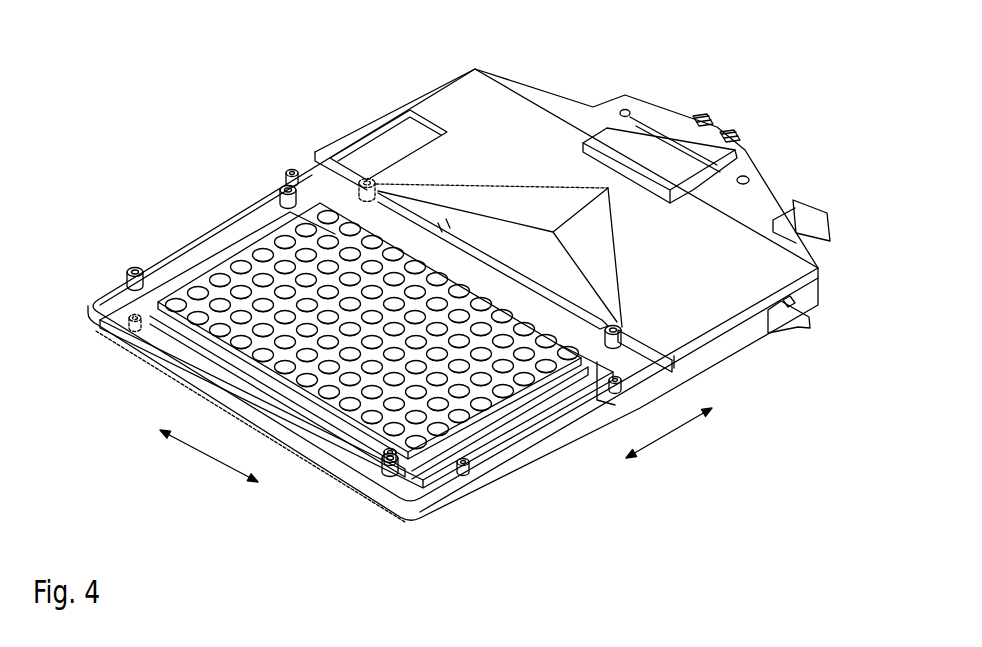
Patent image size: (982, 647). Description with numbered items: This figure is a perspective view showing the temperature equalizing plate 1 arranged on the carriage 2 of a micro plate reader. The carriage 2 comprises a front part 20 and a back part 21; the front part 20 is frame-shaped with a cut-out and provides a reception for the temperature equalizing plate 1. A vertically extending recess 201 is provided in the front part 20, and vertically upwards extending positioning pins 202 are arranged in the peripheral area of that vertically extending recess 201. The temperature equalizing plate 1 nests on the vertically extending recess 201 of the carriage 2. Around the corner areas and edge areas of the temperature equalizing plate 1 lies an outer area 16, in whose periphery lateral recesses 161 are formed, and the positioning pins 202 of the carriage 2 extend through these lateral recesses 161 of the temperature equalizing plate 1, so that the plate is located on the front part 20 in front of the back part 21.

The temperature equalizing plate 1 is at (153, 140).
The carriage 2 is at (818, 72).
The outer area 16 is at (507, 428).
The front part 20 is at (135, 407).
The back part 21 is at (330, 72).
The lateral recesses 161 is at (287, 208).
The vertically extending recess 201 is at (178, 258).
The positioning pins 202 is at (287, 183).